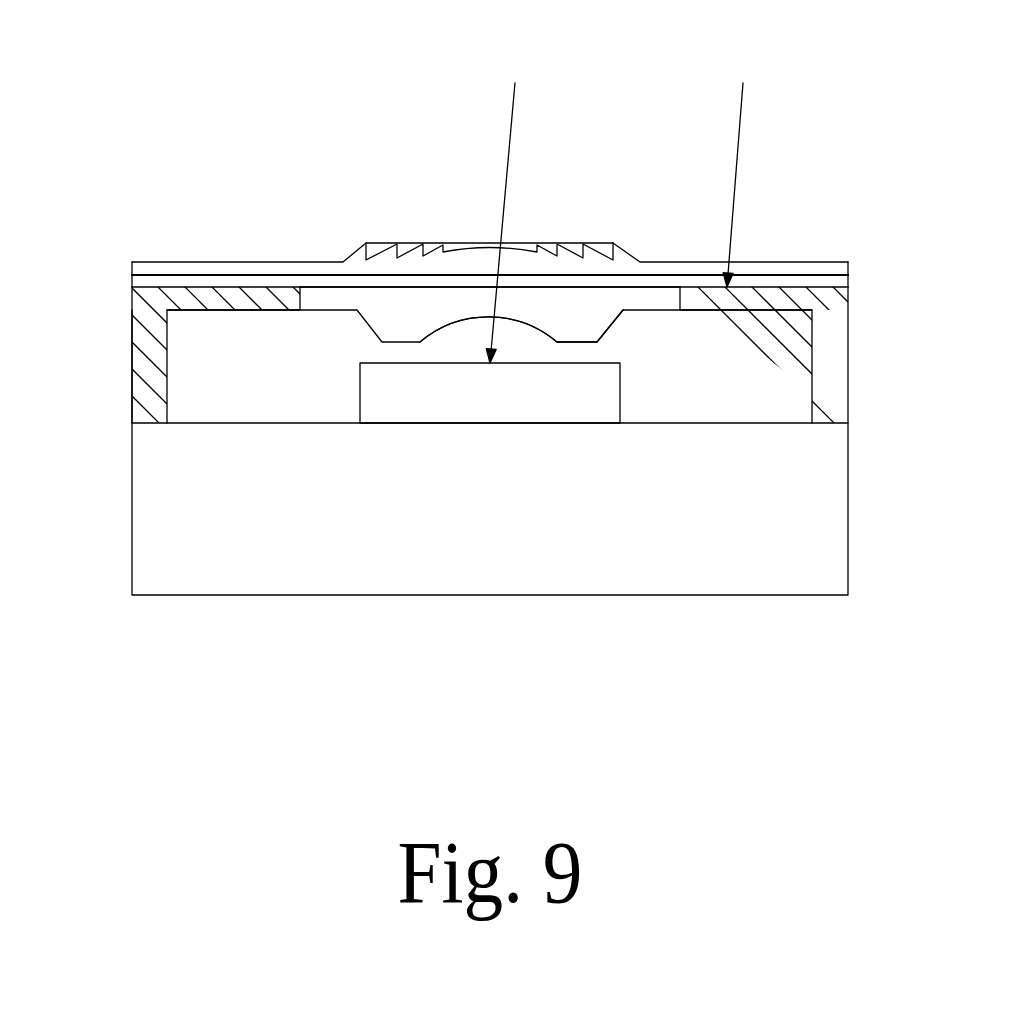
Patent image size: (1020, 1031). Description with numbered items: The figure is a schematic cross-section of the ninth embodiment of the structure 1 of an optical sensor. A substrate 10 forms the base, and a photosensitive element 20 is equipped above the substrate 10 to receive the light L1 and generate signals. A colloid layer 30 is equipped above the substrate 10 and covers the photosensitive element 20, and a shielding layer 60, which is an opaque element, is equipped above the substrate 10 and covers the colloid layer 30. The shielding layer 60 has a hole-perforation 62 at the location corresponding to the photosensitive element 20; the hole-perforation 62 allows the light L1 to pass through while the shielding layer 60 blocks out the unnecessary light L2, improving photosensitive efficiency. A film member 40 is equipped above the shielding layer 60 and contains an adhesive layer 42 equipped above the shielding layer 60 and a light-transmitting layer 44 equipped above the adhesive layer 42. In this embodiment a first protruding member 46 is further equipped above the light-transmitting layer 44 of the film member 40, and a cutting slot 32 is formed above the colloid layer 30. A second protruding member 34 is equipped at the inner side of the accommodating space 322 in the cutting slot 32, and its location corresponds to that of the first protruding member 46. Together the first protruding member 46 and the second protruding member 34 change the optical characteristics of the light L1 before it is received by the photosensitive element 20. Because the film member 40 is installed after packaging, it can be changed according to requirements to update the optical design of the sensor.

The structure of an optical sensor 1 is at (876, 38).
The substrate 10 is at (178, 596).
The photosensitive element 20 is at (360, 392).
The colloid layer 30 is at (167, 388).
The cutting slot 32 is at (614, 329).
The second protruding member 34 is at (430, 330).
The accommodating space 322 is at (583, 313).
The film member 40 is at (127, 211).
The adhesive layer 42 is at (131, 274).
The light-transmitting layer 44 is at (237, 262).
The first protruding member 46 is at (359, 245).
The shielding layer 60 is at (133, 368).
The hole-perforation 62 is at (649, 283).
The light L1 is at (513, 115).
The unnecessary light L2 is at (742, 115).